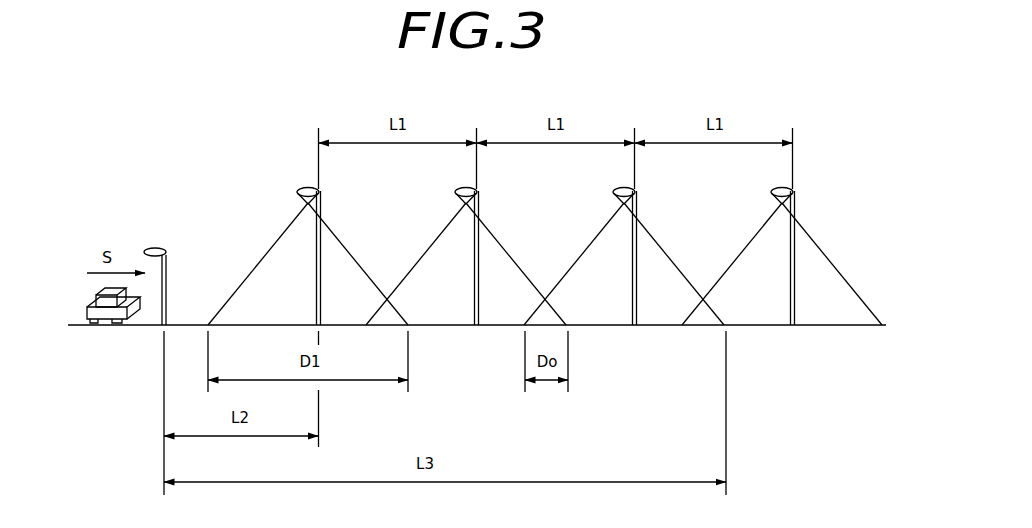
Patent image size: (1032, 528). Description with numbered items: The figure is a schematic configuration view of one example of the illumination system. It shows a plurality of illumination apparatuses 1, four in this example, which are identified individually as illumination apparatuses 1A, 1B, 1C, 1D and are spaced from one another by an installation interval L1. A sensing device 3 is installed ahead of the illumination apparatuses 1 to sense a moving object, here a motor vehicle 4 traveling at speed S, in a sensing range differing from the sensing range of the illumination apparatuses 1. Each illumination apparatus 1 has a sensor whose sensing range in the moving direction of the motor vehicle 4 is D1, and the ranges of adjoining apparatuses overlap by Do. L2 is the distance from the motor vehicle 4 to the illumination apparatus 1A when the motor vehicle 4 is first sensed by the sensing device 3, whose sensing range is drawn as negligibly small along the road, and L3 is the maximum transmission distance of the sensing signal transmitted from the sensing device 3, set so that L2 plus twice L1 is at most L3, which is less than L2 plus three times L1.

The illumination apparatus 1 is at (545, 226).
The illumination apparatus 1A is at (297, 192).
The illumination apparatus 1B is at (455, 192).
The illumination apparatus 1C is at (613, 192).
The illumination apparatus 1D is at (771, 192).
The sensing device 3 is at (160, 247).
The motor vehicle 4 is at (97, 293).